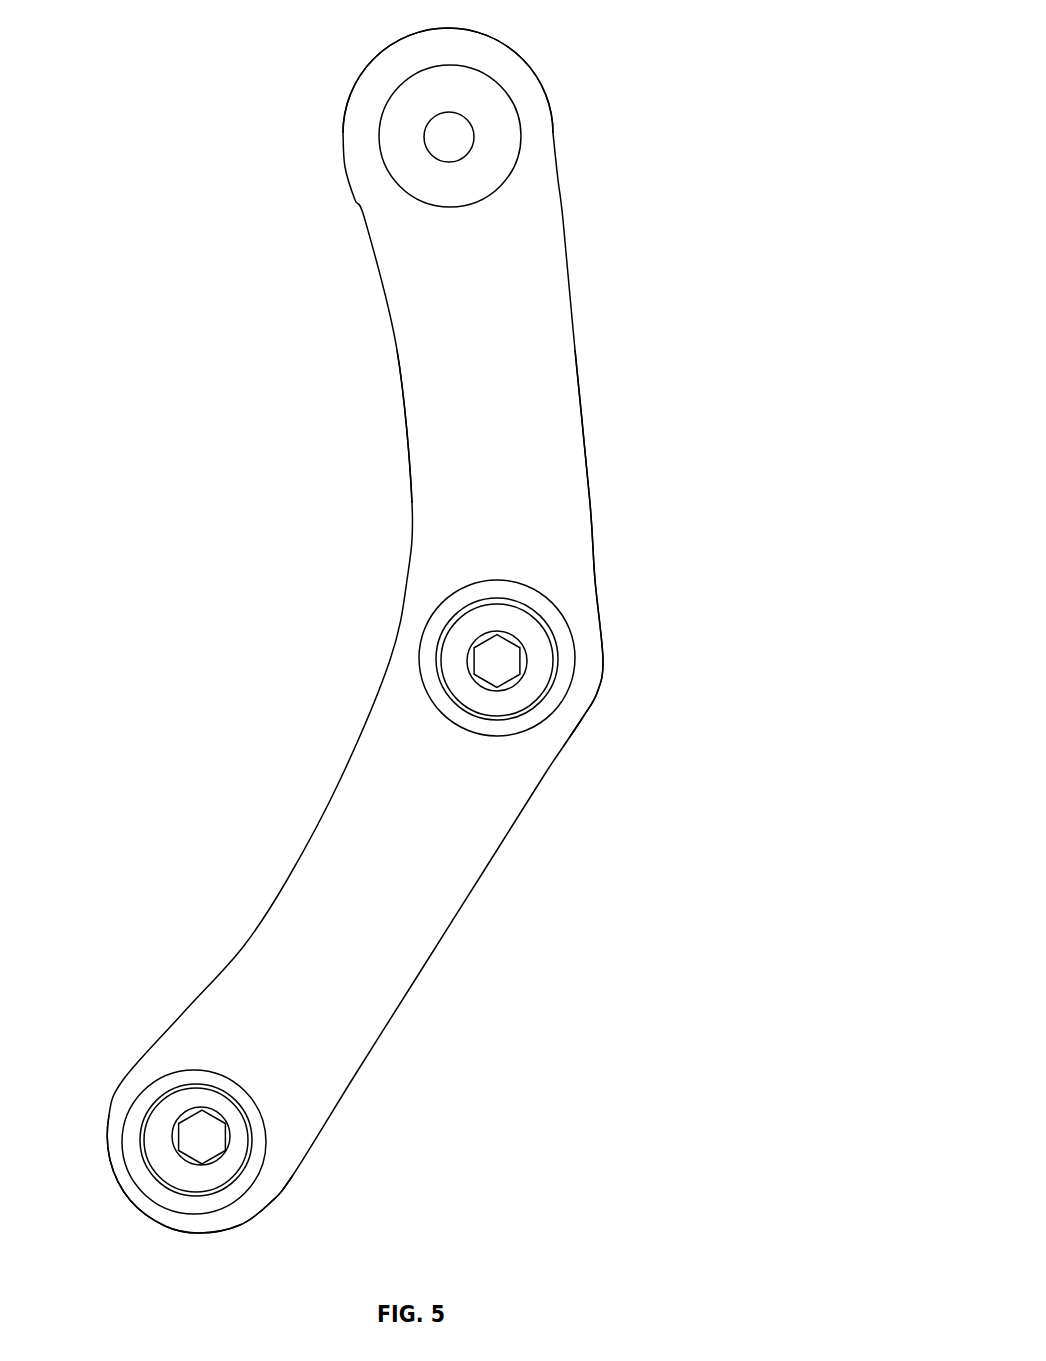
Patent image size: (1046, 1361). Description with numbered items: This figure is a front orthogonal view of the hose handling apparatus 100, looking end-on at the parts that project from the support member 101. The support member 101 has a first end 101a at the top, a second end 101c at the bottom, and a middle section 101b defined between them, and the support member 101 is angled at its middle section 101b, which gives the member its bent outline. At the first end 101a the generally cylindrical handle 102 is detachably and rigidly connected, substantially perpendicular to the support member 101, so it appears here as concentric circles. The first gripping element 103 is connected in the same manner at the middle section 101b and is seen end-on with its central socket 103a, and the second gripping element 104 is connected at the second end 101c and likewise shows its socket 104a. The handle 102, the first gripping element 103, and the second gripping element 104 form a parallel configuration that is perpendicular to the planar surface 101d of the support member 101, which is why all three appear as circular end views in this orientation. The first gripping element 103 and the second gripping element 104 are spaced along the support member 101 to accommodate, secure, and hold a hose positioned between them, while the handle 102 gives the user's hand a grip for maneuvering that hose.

The hose handling apparatus 100 is at (658, 48).
The support member 101 is at (522, 41).
The first end 101a is at (569, 93).
The middle section 101b is at (611, 688).
The second end 101c is at (287, 1211).
The planar surface 101d is at (449, 351).
The generally cylindrical handle 102 is at (373, 106).
The first generally cylindrical curvilinear gripping element 103 is at (408, 629).
The hex socket of first fastener 103a is at (499, 668).
The second generally cylindrical curvilinear gripping element 104 is at (156, 1060).
The hex socket of second fastener 104a is at (204, 1129).